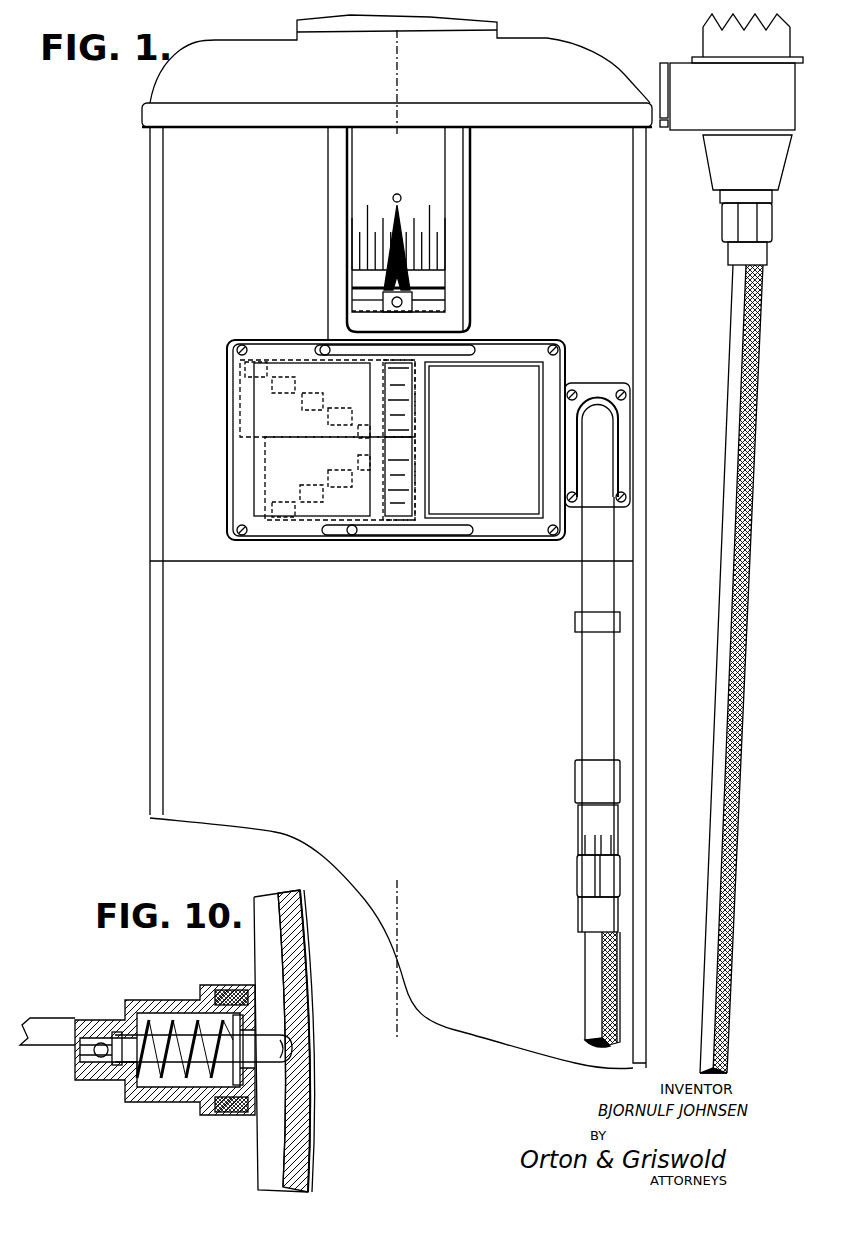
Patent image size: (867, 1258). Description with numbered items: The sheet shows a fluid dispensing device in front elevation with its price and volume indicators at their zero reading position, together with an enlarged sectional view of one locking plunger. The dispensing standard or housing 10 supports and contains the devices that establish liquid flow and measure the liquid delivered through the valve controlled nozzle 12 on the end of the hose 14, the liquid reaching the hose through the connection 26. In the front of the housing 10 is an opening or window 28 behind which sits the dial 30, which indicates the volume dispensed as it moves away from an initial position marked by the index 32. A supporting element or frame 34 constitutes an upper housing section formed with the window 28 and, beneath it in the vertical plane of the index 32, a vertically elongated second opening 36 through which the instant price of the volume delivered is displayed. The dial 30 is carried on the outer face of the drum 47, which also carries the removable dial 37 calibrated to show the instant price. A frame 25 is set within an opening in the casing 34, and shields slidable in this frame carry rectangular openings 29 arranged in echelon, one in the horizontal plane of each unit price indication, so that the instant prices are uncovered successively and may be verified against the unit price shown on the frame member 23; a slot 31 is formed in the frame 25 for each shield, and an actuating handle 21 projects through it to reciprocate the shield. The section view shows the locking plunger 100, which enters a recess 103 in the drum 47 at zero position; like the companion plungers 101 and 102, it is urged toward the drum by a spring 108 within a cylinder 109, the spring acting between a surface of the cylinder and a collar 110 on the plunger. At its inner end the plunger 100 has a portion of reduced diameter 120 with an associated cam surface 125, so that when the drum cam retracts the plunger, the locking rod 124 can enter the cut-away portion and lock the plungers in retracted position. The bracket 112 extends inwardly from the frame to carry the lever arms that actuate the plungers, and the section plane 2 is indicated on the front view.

In FIG. 1, the dispensing standard or housing 10 is at (177, 636).
In FIG. 1, the valve controlled nozzle 12 is at (600, 548).
In FIG. 1, the hose 14 is at (595, 975).
In FIG. 1, the actuating handle 21 is at (355, 540).
In FIG. 1, the frame member 23 is at (370, 395).
In FIG. 1, the frame 25 is at (515, 352).
In FIG. 1, the connection 26 is at (710, 112).
In FIG. 1, the opening or window 28 is at (442, 303).
In FIG. 1, the rectangular openings 29 is at (303, 402).
In FIG. 1, the dial 30 is at (432, 200).
In FIG. 10, the dial 30 is at (313, 1093).
In FIG. 1, the slot 31 is at (400, 405).
In FIG. 1, the index 32 is at (407, 278).
In FIG. 1, the supporting element or frame 34 is at (612, 322).
In FIG. 1, the second opening 36 is at (408, 490).
In FIG. 1, the removable dial 37 is at (367, 300).
In FIG. 10, the drum or indicator support 47 is at (295, 1157).
In FIG. 10, the plunger or locking pin 100 is at (157, 1040).
In FIG. 1, the plunger or locking pin 101 is at (393, 198).
In FIG. 1, the plunger or locking pin 102 is at (390, 300).
In FIG. 10, the recess 103 is at (275, 1027).
In FIG. 10, the springs 108 is at (177, 1060).
In FIG. 10, the cylinders 109 is at (182, 1095).
In FIG. 10, the collar 110 is at (190, 1010).
In FIG. 10, the bracket 112 is at (40, 1030).
In FIG. 10, the portion of reduced diameter 120 is at (88, 1043).
In FIG. 10, the locking rod 124 is at (80, 1063).
In FIG. 10, the cam surface 125 is at (115, 1062).
In FIG. 1, the section line 2- 2 is at (360, 48).